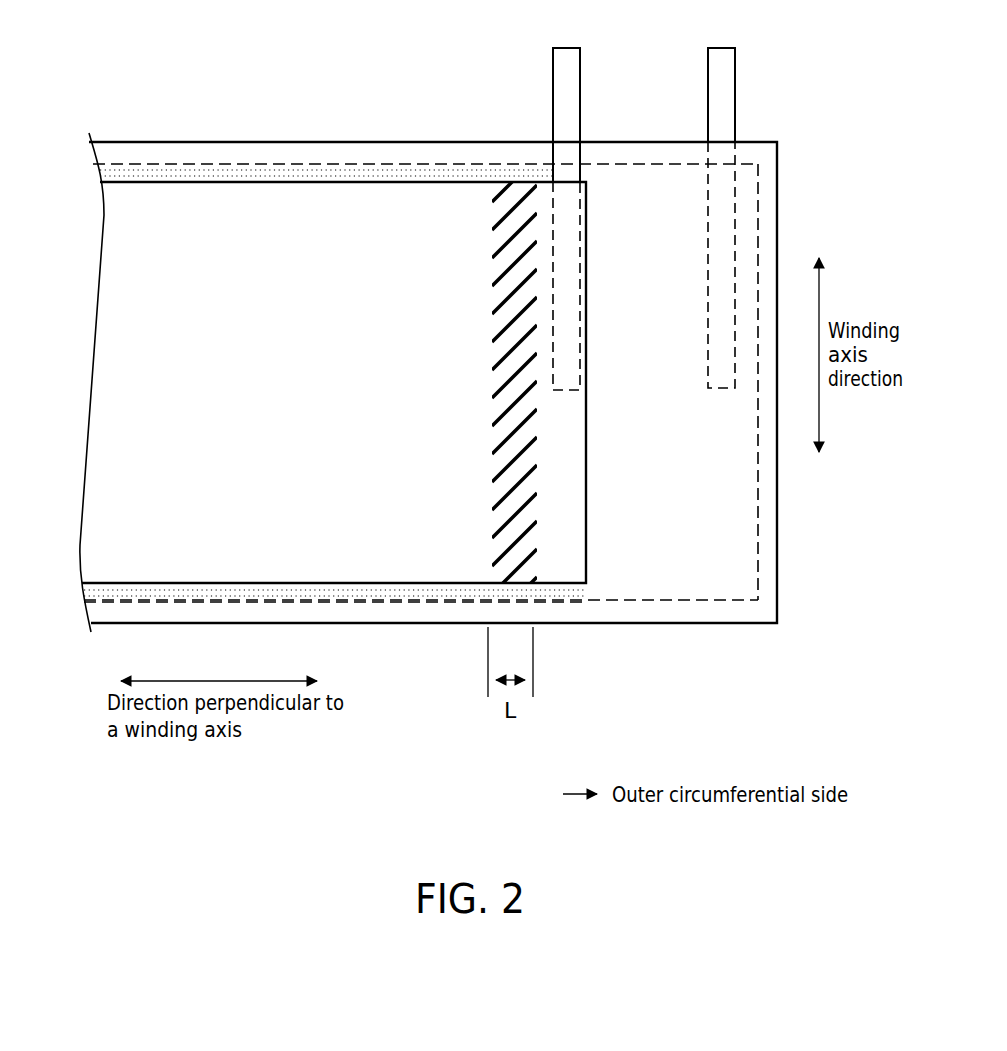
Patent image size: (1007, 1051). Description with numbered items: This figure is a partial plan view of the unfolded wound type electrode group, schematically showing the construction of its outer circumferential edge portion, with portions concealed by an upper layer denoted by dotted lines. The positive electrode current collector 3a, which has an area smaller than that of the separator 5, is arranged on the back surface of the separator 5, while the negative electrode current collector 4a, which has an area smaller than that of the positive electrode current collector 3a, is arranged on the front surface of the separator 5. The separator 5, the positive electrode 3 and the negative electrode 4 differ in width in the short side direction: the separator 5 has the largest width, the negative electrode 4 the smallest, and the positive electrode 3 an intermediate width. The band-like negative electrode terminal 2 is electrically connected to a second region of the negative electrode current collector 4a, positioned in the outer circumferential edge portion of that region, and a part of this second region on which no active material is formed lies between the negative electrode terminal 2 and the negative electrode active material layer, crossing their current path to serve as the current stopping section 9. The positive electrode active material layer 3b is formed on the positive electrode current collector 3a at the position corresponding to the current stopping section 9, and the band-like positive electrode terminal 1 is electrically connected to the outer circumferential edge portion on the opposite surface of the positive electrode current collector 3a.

The positive electrode terminal 1 is at (722, 55).
The negative electrode terminal 2 is at (567, 55).
The positive electrode 3 is at (452, 348).
The positive electrode current collector 3a is at (748, 548).
The positive electrode active material layer 3b is at (453, 166).
The negative electrode 4 is at (572, 592).
The negative electrode current collector 4a is at (336, 180).
The separator 5 is at (770, 197).
The current stopping section 9 is at (527, 503).